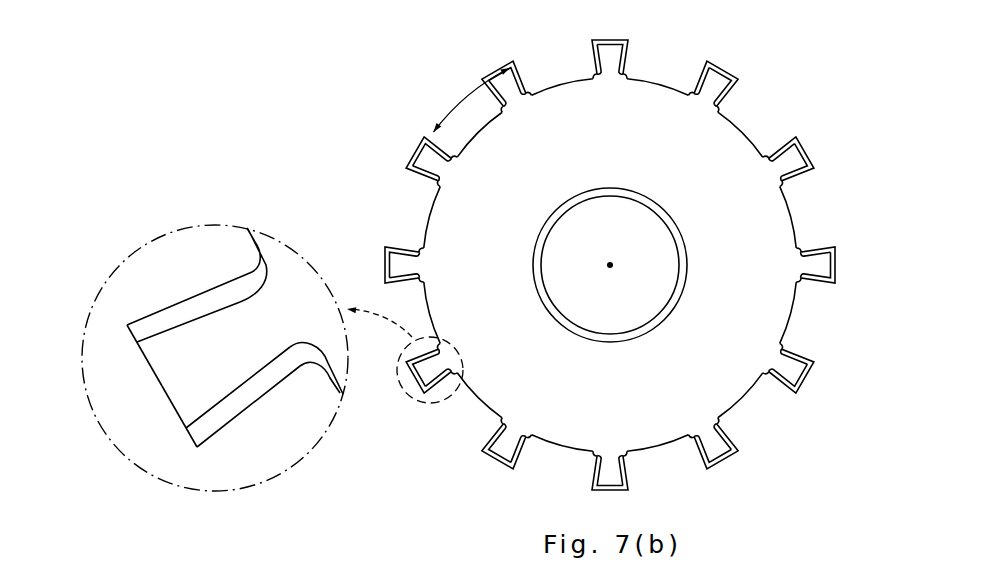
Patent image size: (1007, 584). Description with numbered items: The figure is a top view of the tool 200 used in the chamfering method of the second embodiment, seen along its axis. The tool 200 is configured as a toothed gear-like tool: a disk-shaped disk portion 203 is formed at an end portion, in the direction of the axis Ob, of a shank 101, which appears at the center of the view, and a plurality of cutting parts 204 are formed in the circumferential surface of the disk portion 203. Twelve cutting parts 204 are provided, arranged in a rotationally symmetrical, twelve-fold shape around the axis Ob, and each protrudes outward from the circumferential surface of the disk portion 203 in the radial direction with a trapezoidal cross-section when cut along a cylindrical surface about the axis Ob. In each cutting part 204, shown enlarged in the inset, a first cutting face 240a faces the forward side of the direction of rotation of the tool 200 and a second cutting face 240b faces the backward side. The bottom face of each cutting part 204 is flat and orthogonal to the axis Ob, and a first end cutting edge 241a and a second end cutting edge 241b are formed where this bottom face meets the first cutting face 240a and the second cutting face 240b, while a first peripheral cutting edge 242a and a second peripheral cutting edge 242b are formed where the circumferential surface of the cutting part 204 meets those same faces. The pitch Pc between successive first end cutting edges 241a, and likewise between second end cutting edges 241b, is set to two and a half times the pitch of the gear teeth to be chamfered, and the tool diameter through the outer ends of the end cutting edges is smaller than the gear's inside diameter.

The tool 200 is at (793, 84).
The disk portion 203 is at (645, 420).
The cutting part 204 is at (610, 478).
The shank 101 is at (638, 236).
The axis Ob is at (613, 265).
The pitch Pc is at (460, 104).
The first cutting face 240a is at (210, 303).
The second cutting face 240b is at (260, 383).
The first end cutting edge 241a is at (190, 293).
The second end cutting edge 241b is at (255, 403).
The first peripheral cutting edge 242a is at (127, 326).
The second peripheral cutting edge 242b is at (197, 447).